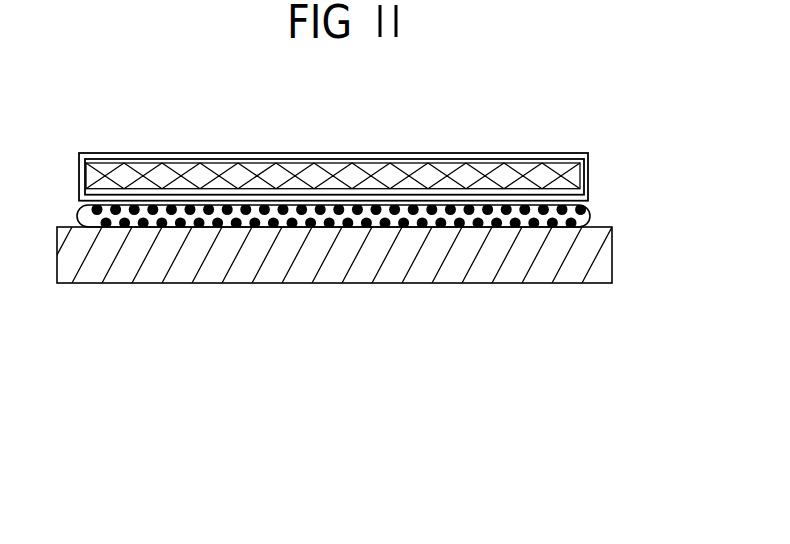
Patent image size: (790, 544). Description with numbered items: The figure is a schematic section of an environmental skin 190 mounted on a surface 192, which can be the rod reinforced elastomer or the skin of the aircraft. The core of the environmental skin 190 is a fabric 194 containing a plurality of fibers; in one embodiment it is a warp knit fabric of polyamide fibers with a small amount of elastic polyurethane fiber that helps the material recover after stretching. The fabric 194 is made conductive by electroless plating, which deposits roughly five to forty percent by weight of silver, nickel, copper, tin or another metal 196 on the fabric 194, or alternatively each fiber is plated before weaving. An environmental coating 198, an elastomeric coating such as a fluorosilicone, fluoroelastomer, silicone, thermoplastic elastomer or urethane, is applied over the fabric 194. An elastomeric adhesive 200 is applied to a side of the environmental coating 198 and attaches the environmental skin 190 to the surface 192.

The environmental skin 190 is at (368, 99).
The surface 192 is at (392, 284).
The fabric 194 is at (589, 176).
The metal 196 is at (548, 160).
The environmental coating 198 is at (443, 159).
The elastomeric adhesive 200 is at (591, 220).